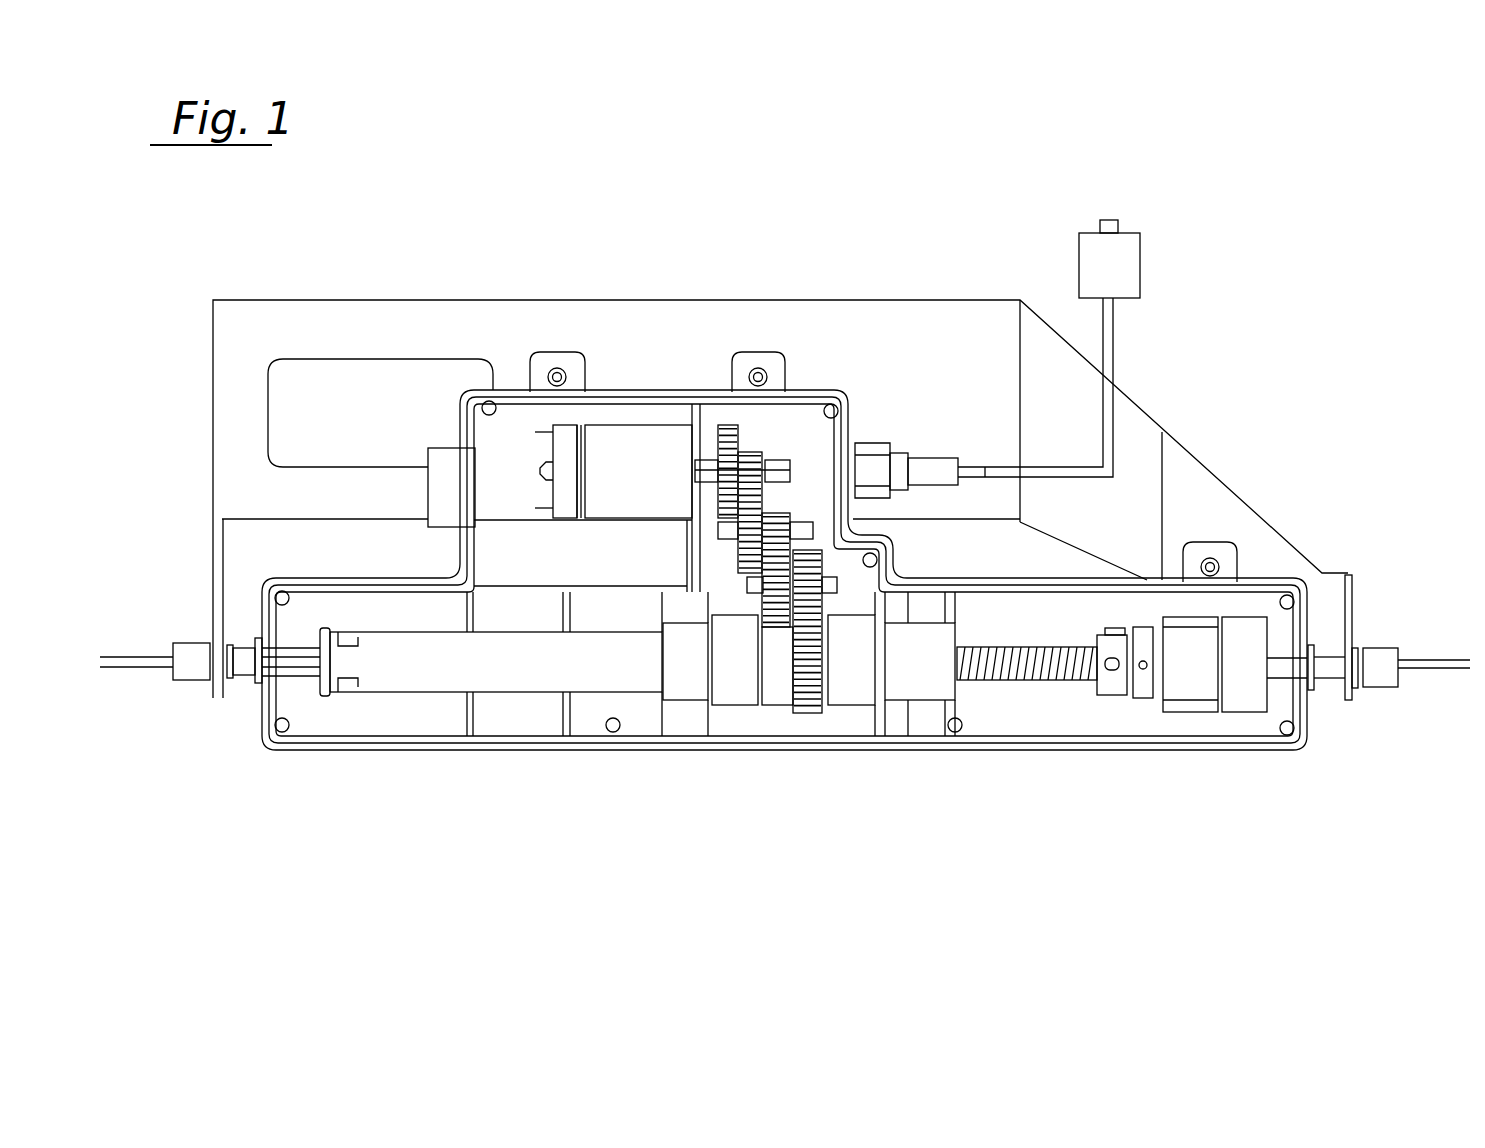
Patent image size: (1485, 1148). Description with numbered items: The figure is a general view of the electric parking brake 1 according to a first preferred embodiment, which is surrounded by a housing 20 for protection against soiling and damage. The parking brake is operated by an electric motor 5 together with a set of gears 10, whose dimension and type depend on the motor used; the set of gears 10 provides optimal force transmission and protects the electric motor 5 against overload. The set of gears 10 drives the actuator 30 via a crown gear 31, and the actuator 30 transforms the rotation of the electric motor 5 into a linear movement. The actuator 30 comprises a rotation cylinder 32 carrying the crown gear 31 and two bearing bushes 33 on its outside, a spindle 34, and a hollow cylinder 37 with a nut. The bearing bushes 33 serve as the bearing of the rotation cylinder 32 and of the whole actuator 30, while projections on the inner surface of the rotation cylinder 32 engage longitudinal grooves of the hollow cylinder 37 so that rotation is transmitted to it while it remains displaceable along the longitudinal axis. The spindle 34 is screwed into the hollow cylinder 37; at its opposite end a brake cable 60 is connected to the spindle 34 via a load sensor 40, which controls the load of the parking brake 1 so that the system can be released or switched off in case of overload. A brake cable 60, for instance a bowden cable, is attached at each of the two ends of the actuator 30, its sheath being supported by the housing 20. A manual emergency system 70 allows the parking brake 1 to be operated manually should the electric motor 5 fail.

The parking brake 1 is at (1262, 188).
The electric motor 5 is at (640, 452).
The set of gears 10 is at (767, 462).
The housing 20 is at (510, 393).
The actuator 30 is at (781, 668).
The crown gear 31 is at (812, 682).
The rotation cylinder 32 is at (782, 675).
The bearing bushes 33 is at (733, 690).
The spindle 34 is at (1048, 672).
The hollow cylinder 37 is at (507, 670).
The load sensor 40 is at (1198, 672).
The brake cable 60 is at (153, 665).
The manual emergency system 70 is at (1130, 265).